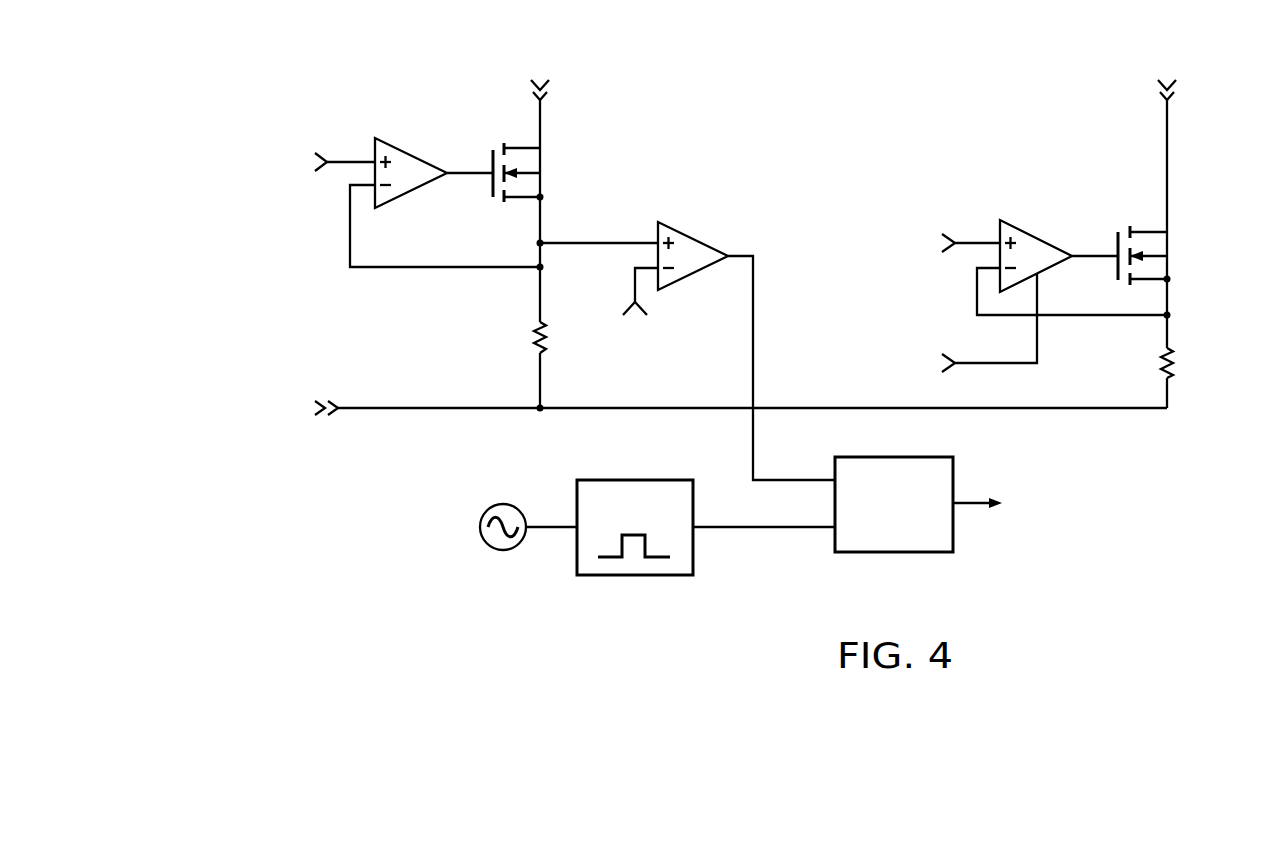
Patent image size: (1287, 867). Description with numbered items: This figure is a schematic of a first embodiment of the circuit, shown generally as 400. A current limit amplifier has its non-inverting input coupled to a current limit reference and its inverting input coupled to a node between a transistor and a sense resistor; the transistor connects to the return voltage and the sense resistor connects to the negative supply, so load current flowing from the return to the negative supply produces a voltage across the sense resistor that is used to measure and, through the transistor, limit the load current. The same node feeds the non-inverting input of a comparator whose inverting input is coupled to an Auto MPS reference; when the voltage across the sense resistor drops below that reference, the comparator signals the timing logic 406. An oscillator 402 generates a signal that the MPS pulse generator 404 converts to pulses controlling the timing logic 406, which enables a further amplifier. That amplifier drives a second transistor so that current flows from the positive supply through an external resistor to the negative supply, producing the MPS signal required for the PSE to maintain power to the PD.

The circuit 400 is at (862, 95).
The oscillator OSC1 402 is at (507, 552).
The MPS pulse generator 404 is at (635, 577).
The timing logic 406 is at (895, 553).